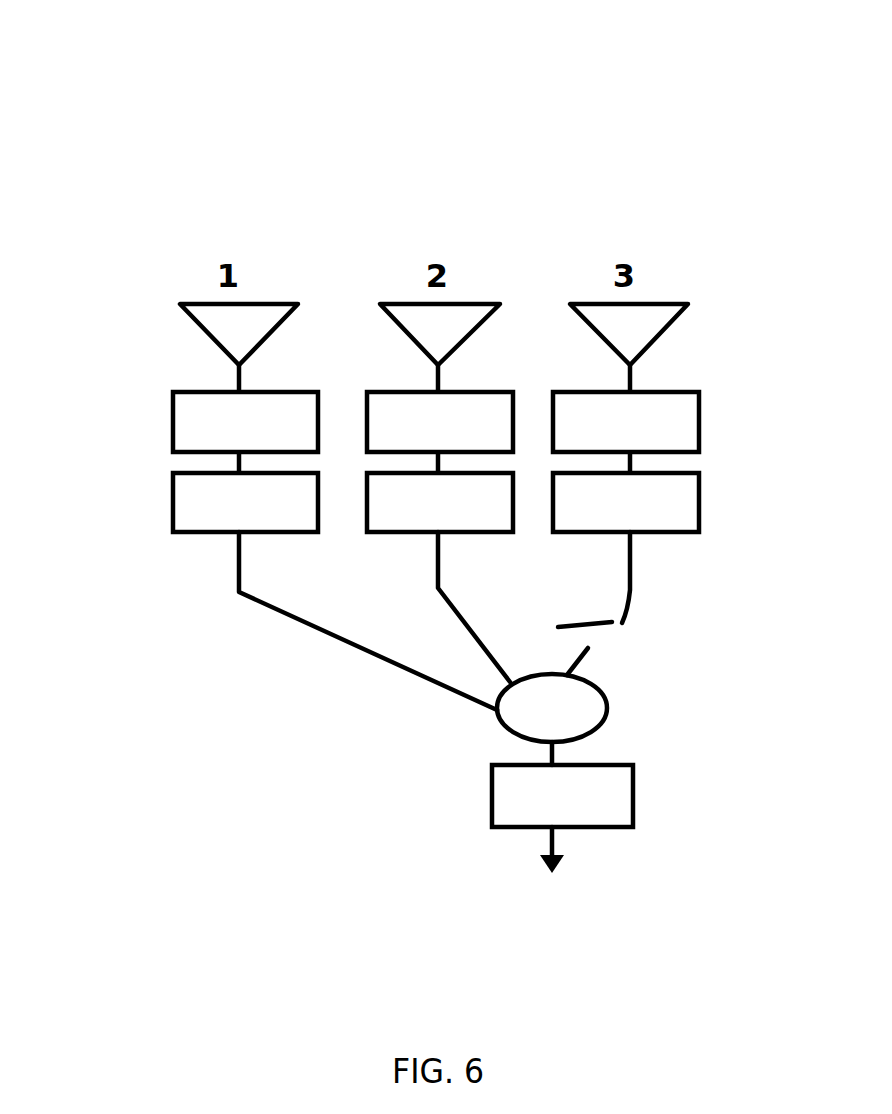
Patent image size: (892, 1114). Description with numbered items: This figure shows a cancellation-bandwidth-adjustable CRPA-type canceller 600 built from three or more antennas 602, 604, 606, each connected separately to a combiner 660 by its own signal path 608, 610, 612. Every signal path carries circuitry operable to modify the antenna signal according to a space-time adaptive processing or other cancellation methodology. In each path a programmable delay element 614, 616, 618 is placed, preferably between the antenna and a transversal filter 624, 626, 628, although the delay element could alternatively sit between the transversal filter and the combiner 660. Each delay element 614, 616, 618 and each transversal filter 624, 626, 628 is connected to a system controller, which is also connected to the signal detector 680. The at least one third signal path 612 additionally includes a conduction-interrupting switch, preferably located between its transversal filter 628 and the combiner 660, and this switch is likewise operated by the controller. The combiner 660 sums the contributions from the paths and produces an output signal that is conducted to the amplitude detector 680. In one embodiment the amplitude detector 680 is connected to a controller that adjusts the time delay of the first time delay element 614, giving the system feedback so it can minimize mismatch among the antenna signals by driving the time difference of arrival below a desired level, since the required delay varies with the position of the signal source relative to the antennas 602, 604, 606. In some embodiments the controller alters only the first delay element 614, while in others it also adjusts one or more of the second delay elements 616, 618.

The CBW-adjustable CRPA-type canceller 600 is at (441, 190).
The antenna 602 is at (190, 315).
The antenna 604 is at (456, 347).
The antenna 606 is at (660, 335).
The signal path 608 is at (237, 374).
The signal path 610 is at (441, 377).
The third signal path 612 is at (634, 378).
The first adjustable time delay element 614 is at (183, 414).
The second adjustable time delay element 616 is at (393, 405).
The second adjustable time delay element 618 is at (700, 407).
The transversal filter 624 is at (183, 495).
The transversal filter 626 is at (372, 532).
The transversal filter 628 is at (690, 506).
The combiner 660 is at (610, 706).
The amplitude detector 680 is at (618, 802).